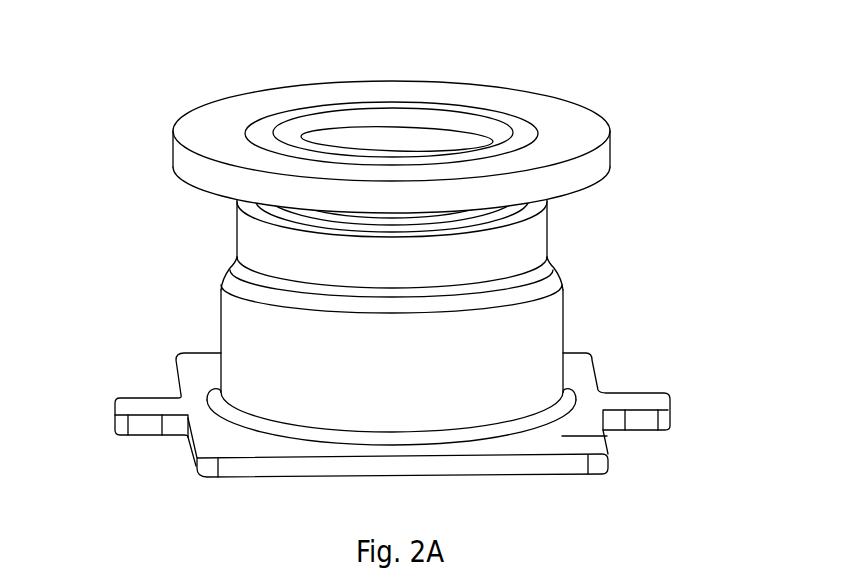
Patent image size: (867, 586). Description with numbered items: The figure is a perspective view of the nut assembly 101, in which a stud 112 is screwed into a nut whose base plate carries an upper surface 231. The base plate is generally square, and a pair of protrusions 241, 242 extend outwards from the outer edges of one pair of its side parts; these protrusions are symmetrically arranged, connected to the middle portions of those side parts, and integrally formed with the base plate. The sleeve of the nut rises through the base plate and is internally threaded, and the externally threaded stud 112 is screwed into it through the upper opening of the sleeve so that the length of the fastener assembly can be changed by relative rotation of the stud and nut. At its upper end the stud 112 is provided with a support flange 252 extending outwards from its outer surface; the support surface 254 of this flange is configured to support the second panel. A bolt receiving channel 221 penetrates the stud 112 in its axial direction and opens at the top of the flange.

The nut assembly 101 is at (560, 280).
The stud 112 is at (532, 147).
The bolt receiving channel 221 is at (400, 143).
The upper surface 231 is at (503, 447).
The protrusion 241 is at (152, 407).
The protrusion 242 is at (662, 396).
The support flange 252 is at (200, 130).
The support surface 254 is at (315, 97).